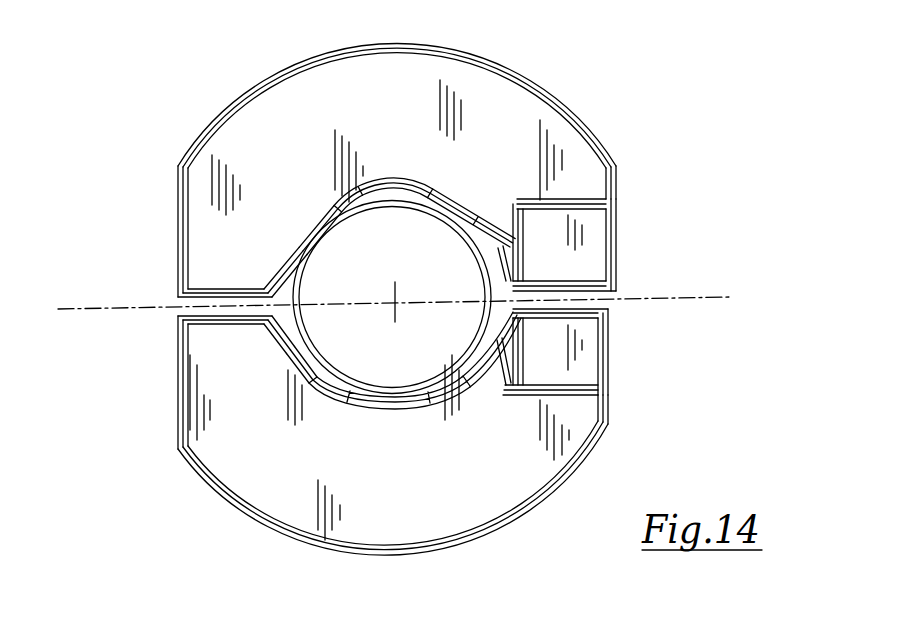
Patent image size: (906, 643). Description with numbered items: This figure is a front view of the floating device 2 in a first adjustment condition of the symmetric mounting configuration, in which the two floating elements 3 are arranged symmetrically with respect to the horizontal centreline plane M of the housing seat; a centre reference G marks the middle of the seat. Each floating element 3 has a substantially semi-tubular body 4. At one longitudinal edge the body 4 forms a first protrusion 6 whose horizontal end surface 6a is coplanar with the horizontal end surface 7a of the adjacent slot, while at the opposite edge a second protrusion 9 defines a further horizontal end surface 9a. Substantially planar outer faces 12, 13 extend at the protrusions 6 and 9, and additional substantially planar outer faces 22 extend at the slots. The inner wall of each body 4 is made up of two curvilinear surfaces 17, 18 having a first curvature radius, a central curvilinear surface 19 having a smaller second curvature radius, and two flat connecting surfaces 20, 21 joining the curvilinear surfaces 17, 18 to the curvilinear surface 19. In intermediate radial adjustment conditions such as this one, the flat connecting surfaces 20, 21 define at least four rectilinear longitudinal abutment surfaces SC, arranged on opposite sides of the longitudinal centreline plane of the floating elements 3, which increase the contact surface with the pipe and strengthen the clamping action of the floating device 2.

The floating device 2 is at (570, 86).
The floating element 3 is at (284, 126).
The substantially semi-tubular body 4 is at (518, 62).
The first protrusion 6 is at (578, 257).
The horizontal end surface 6a is at (612, 297).
The horizontal end surface 7a is at (598, 222).
The second protrusion 9 is at (203, 215).
The horizontal end surface 9a is at (182, 300).
The substantially planar outer face 12 is at (612, 242).
The substantially planar outer face 13 is at (178, 188).
The curvilinear surface 17 is at (508, 268).
The curvilinear surface 18 is at (268, 278).
The curvilinear surface 19 is at (392, 200).
The flat connecting surface 20 is at (446, 218).
The flat connecting surface 21 is at (300, 240).
The additional substantially planar outer face 22 is at (613, 175).
The rectilinear longitudinal abutment surface SC is at (462, 440).
The center axis G is at (398, 298).
The horizontal centreline plane M is at (733, 268).